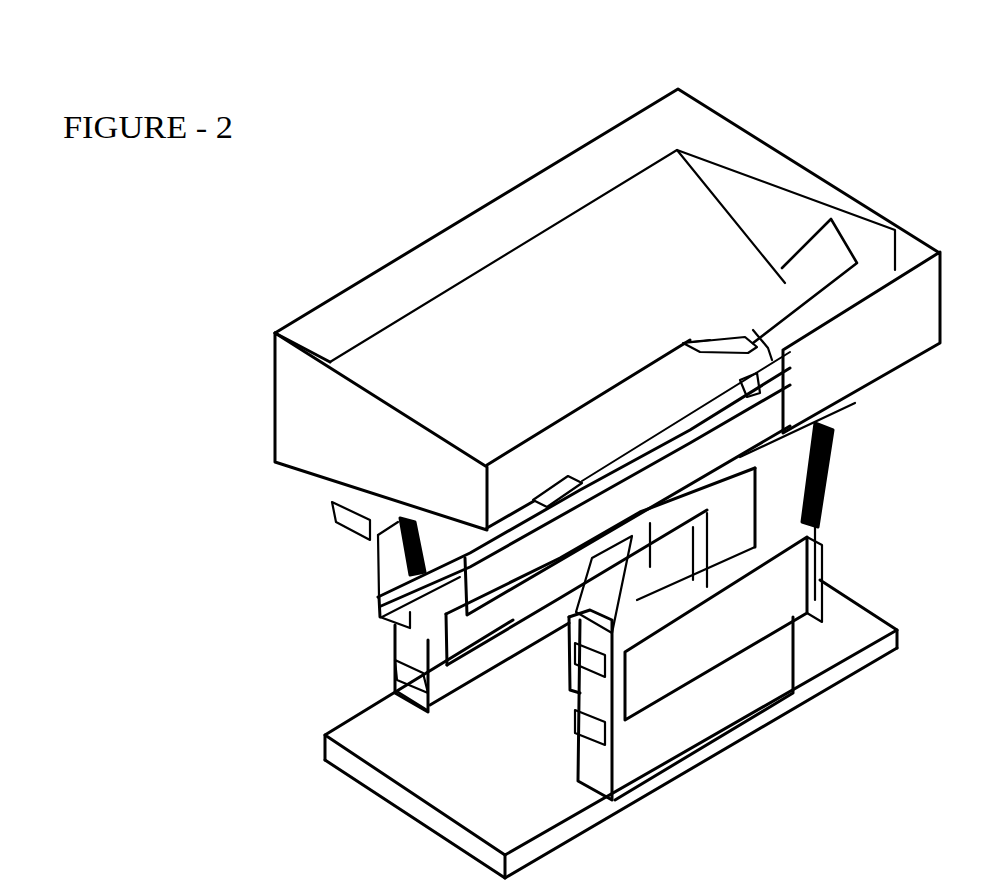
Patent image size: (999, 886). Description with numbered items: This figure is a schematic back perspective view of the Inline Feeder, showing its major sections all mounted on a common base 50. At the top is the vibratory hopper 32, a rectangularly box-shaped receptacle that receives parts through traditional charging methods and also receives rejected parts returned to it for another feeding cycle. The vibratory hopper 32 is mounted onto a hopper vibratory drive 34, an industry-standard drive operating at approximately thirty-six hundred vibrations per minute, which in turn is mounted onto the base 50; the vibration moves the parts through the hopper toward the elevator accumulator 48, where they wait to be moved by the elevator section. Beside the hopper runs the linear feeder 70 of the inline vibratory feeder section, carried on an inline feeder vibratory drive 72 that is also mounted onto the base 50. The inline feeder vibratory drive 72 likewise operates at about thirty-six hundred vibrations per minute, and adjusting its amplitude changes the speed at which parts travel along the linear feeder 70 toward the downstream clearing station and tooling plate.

The vibratory hopper 32 is at (665, 250).
The elevator accumulator 48 is at (777, 293).
The hopper vibratory drive 34 is at (413, 650).
The linear feeder 70 is at (717, 440).
The inline feeder vibratory drive 72 is at (780, 582).
The base 50 is at (590, 822).